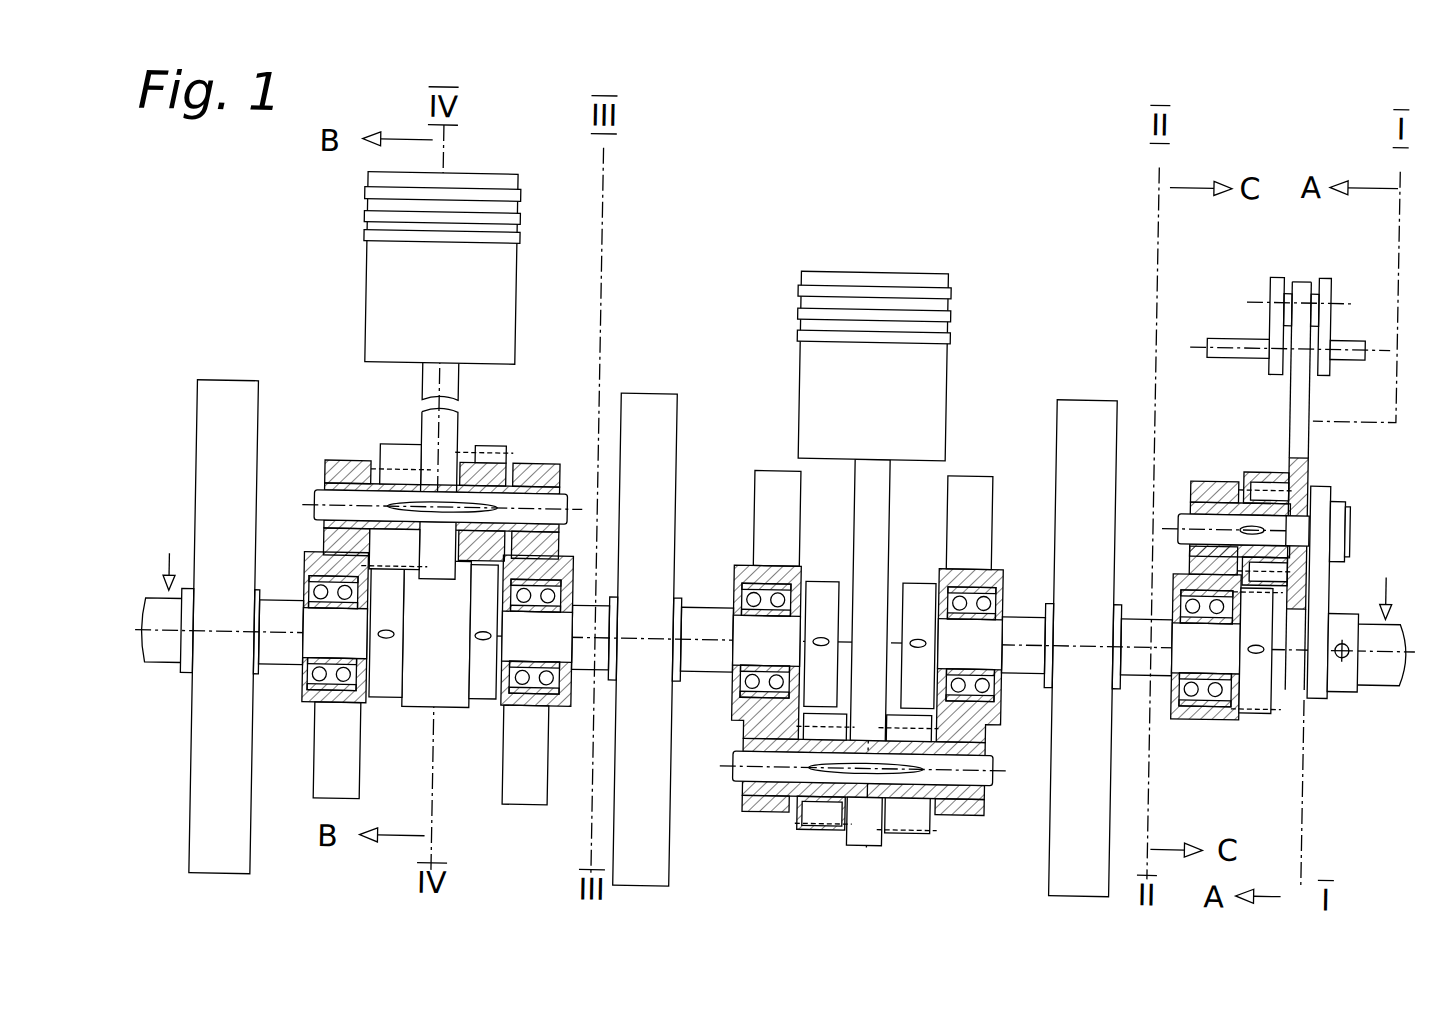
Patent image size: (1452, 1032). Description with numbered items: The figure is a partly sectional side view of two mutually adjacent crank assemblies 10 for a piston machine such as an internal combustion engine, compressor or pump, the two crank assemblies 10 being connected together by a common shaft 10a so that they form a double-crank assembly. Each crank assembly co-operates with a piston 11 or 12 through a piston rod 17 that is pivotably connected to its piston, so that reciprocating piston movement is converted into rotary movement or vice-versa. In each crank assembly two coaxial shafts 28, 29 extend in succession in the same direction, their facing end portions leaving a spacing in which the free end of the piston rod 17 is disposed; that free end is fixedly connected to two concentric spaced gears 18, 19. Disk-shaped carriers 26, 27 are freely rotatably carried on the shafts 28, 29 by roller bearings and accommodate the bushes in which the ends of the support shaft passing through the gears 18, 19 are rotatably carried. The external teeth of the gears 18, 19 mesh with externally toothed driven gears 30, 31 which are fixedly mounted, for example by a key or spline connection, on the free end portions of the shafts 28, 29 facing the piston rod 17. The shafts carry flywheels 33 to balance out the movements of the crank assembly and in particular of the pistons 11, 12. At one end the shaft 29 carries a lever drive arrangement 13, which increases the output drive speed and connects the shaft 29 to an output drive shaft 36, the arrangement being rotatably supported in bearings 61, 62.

The crank assembly 10 is at (343, 395).
The common shaft 10a is at (703, 673).
The piston 11 is at (400, 257).
The piston 12 is at (874, 279).
The lever drive arrangement 13 is at (1210, 430).
The piston rod 17 is at (440, 385).
The gear 18 is at (394, 459).
The gear 19 is at (475, 454).
The carrier 26 is at (337, 745).
The carrier 27 is at (513, 767).
The shaft 28 is at (578, 630).
The shaft 29 is at (1130, 628).
The driven gear 30 is at (396, 683).
The driven gear 31 is at (483, 684).
The flywheel 33 is at (219, 414).
The output drive shaft 36 is at (1395, 623).
The bearing 61 is at (168, 690).
The bearing 62 is at (1385, 698).